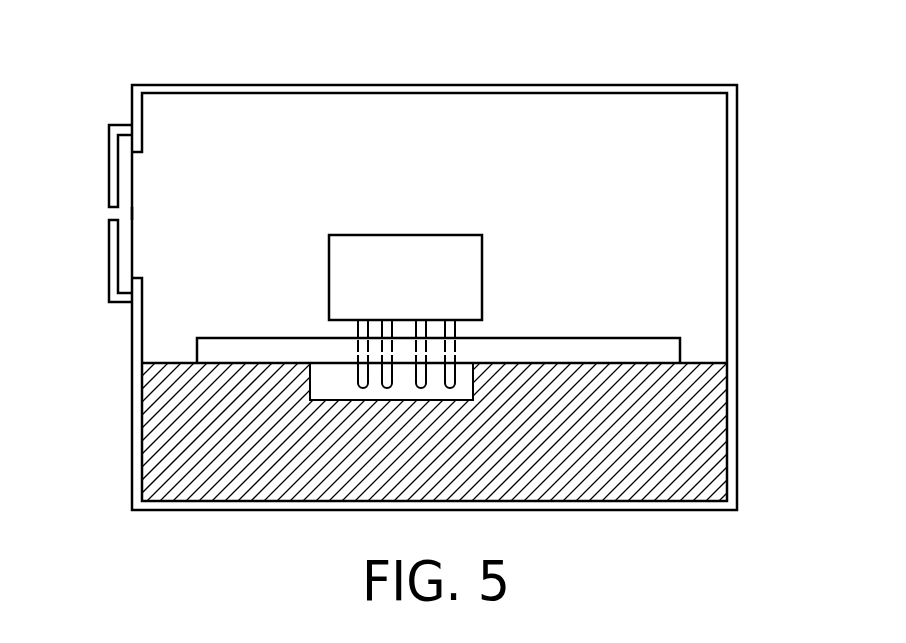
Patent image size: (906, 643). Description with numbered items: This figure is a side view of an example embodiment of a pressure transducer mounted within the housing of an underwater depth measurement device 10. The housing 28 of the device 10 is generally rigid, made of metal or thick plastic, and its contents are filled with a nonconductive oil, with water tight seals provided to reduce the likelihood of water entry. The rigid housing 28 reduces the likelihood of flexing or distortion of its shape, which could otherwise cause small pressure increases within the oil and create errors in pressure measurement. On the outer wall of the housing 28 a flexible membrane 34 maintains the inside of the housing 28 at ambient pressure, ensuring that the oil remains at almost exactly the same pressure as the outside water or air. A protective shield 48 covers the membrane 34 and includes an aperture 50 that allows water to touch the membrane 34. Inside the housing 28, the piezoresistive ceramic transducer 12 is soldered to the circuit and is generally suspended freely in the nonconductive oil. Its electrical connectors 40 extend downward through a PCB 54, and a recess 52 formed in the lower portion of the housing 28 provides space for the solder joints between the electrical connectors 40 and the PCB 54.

The device 10 is at (317, 62).
The piezoresistive ceramic transducer 12 is at (402, 226).
The housing 28 is at (692, 413).
The flexible membrane 34 is at (132, 237).
The electrical connectors 40 is at (448, 375).
The protective shield 48 is at (107, 175).
The aperture 50 is at (110, 207).
The recess 52 is at (333, 380).
The PCB 54 is at (667, 352).